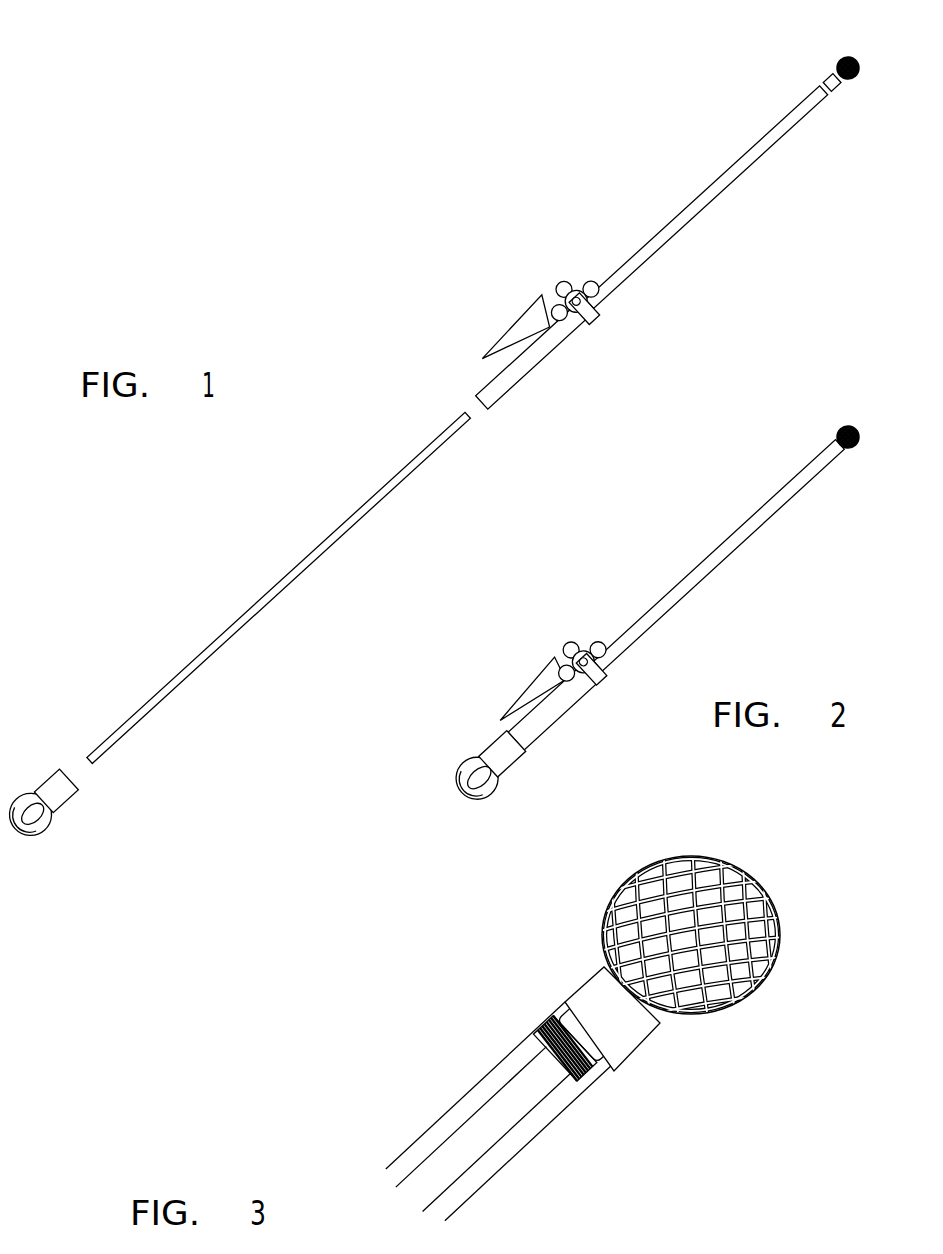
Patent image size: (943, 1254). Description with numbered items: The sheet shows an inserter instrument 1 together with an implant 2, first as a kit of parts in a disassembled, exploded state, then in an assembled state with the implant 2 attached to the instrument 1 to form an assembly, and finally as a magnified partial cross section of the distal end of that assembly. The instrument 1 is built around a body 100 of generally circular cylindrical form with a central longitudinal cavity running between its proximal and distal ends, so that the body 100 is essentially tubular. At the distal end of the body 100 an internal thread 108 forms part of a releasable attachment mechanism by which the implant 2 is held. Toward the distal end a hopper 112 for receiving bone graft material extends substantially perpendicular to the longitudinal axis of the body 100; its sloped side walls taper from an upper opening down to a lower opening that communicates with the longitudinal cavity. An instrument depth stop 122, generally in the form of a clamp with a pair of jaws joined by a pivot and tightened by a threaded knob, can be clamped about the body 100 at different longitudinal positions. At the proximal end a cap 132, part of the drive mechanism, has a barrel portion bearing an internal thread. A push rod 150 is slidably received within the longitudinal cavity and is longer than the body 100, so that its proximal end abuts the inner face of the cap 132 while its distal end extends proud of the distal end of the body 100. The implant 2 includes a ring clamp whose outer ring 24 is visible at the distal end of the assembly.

In FIG. 1, the inserter instrument 1 is at (320, 475).
In FIG. 2, the inserter instrument 1 is at (722, 535).
In FIG. 3, the inserter instrument 1 is at (470, 1060).
In FIG. 1, the implant 2 is at (820, 58).
In FIG. 2, the implant 2 is at (846, 422).
In FIG. 3, the implant 2 is at (772, 1006).
In FIG. 3, the outer ring 24 is at (600, 993).
In FIG. 1, the body 100 is at (694, 198).
In FIG. 2, the body 100 is at (712, 571).
In FIG. 3, the internal thread 108 is at (589, 1072).
In FIG. 1, the hopper 112 is at (512, 320).
In FIG. 2, the hopper 112 is at (514, 667).
In FIG. 1, the instrument depth stop 122 is at (607, 335).
In FIG. 2, the instrument depth stop 122 is at (611, 692).
In FIG. 1, the cap 132 is at (62, 838).
In FIG. 2, the cap 132 is at (453, 762).
In FIG. 1, the push rod 150 is at (204, 650).